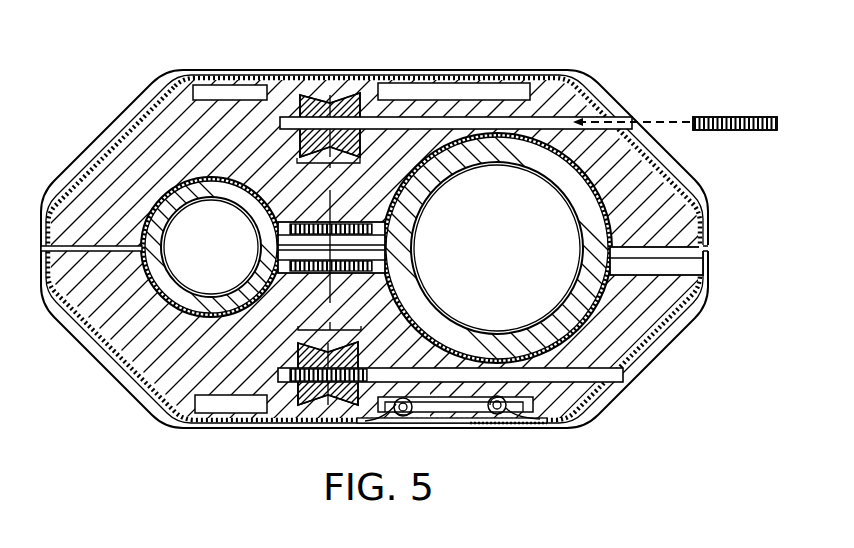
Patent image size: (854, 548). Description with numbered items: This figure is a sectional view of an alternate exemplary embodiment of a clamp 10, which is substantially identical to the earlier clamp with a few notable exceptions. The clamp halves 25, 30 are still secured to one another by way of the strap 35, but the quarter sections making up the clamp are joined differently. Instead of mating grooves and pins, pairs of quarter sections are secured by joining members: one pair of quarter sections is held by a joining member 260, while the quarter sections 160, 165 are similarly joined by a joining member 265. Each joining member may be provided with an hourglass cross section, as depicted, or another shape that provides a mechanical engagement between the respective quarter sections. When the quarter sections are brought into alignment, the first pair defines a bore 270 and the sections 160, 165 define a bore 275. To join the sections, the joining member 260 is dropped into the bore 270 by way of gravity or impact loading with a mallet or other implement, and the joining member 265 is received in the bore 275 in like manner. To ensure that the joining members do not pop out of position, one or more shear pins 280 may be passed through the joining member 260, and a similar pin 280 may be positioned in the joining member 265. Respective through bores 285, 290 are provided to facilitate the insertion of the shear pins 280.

The clamp 10 is at (75, 72).
The clamp half 25 is at (115, 406).
The clamp half 30 is at (255, 62).
The strap 35 is at (412, 82).
The quarter section 160 is at (147, 130).
The quarter section 165 is at (587, 105).
The joining member 260 is at (298, 350).
The joining member 265 is at (328, 103).
The bore 270 is at (329, 315).
The bore 275 is at (328, 230).
The shear pin 280 is at (726, 117).
The through bore 285 is at (607, 375).
The through bore 290 is at (557, 127).